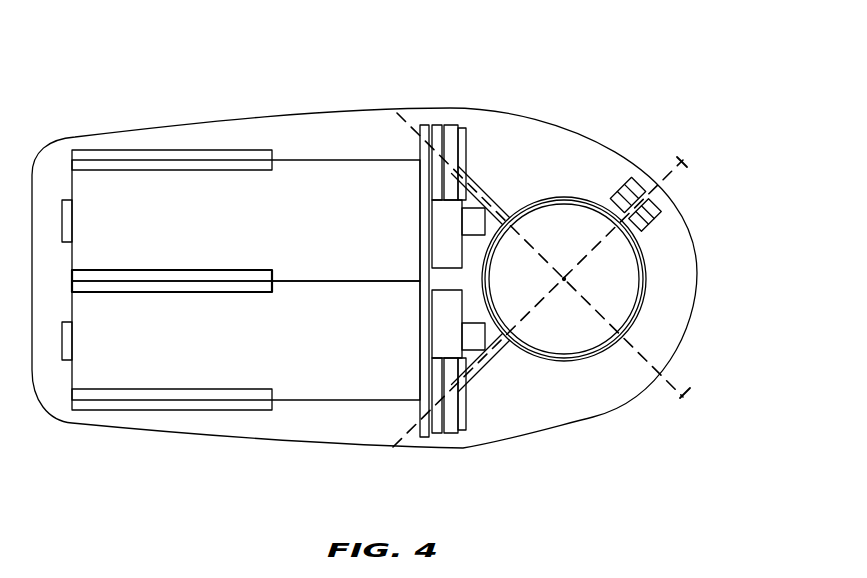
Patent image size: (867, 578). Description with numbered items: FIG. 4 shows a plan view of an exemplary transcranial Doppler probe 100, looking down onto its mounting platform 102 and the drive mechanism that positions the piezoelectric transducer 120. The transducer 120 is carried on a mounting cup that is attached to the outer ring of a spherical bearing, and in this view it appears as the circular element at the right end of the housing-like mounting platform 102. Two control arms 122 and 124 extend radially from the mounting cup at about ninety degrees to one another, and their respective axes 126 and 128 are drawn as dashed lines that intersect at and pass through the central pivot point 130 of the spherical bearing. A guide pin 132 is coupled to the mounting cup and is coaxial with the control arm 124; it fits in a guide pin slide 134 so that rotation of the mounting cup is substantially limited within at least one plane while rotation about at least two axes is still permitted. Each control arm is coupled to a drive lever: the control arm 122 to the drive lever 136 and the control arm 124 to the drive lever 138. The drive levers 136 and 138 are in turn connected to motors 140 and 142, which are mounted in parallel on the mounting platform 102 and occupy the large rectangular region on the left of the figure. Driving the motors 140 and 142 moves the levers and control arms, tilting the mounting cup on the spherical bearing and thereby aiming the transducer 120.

The transcranial Doppler probe 100 is at (617, 118).
The mounting platform 102 is at (364, 237).
The piezoelectric transducer 120 is at (635, 279).
The control arm 122 is at (540, 212).
The control arm 124 is at (538, 317).
The axis 126 is at (741, 369).
The axis 128 is at (731, 181).
The central pivot point 130 is at (644, 377).
The guide pin 132 is at (706, 234).
The guide pin slide 134 is at (698, 158).
The drive lever 136 is at (410, 154).
The drive lever 138 is at (415, 391).
The motor 140 is at (220, 169).
The motor 142 is at (236, 373).